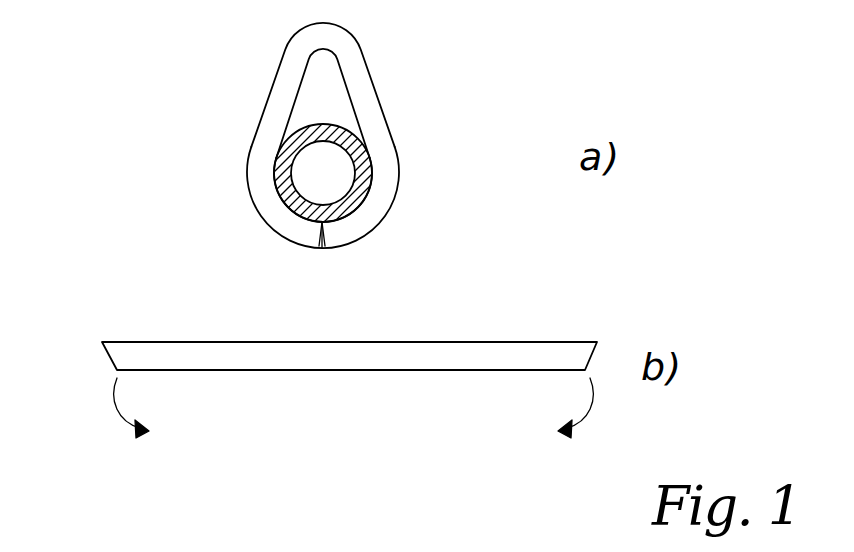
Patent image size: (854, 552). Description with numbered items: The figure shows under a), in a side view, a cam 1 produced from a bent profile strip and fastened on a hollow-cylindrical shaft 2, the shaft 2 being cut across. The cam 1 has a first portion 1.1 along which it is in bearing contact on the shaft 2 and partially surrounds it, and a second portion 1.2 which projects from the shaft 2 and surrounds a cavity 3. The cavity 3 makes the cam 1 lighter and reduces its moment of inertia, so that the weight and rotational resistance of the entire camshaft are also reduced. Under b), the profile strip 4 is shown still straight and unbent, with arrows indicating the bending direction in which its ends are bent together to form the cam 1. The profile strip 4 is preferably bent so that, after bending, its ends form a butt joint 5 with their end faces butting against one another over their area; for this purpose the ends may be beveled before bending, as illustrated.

The cam 1 is at (287, 135).
The first portion 1.1 is at (377, 207).
The second portion 1.2 is at (357, 67).
The hollow-cylindrical shaft 2 is at (282, 203).
The cavity 3 is at (317, 106).
The profile strip 4 is at (143, 352).
The butt joint 5 is at (322, 226).